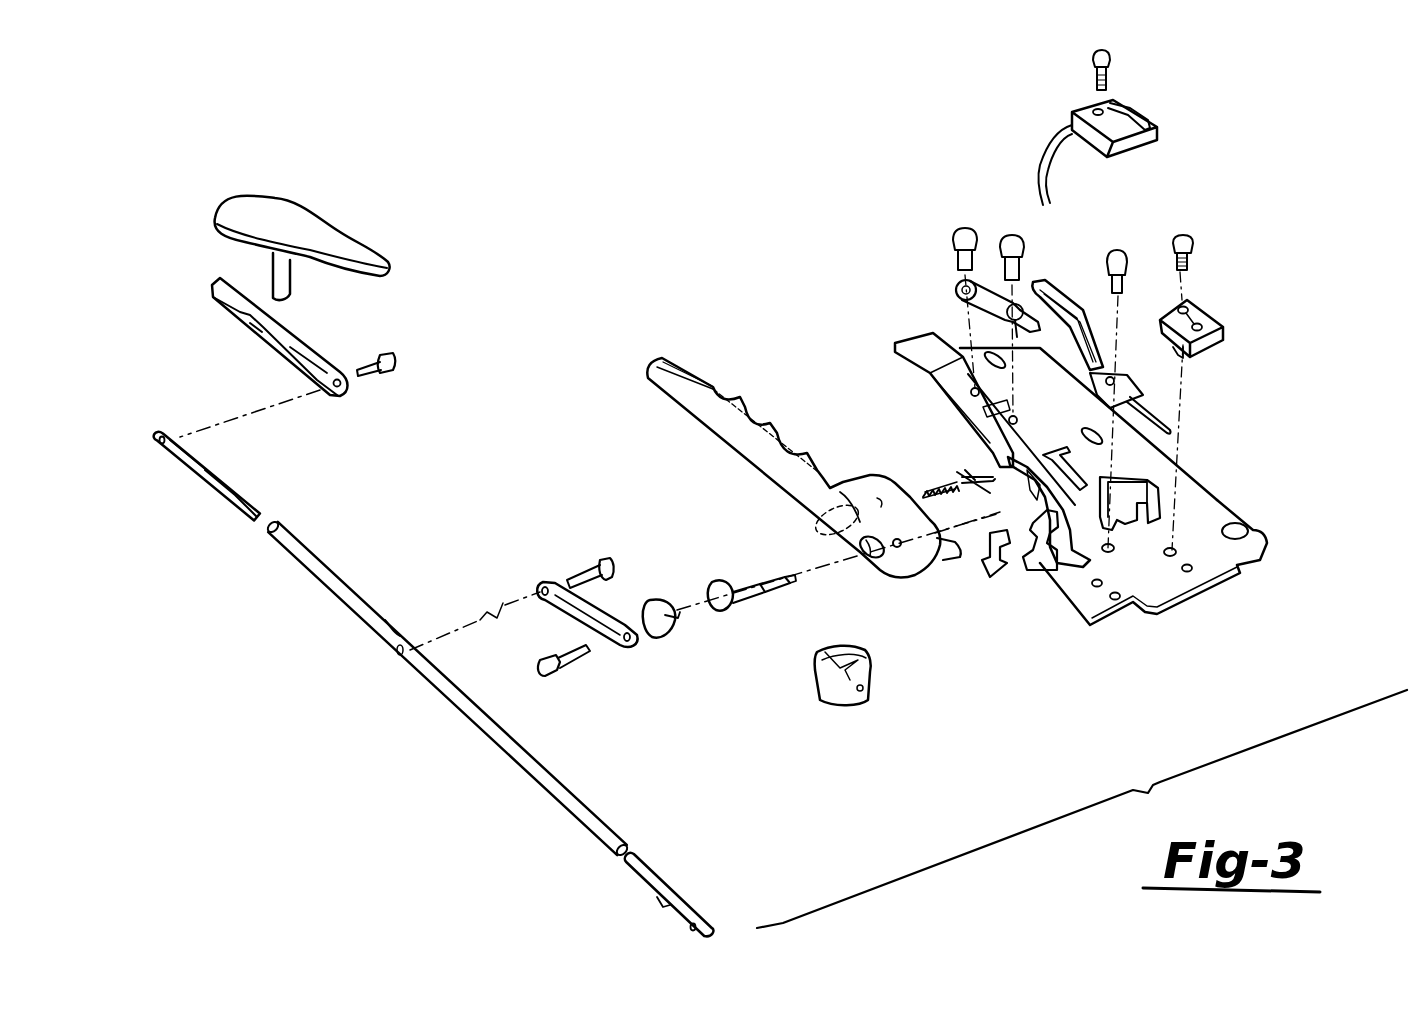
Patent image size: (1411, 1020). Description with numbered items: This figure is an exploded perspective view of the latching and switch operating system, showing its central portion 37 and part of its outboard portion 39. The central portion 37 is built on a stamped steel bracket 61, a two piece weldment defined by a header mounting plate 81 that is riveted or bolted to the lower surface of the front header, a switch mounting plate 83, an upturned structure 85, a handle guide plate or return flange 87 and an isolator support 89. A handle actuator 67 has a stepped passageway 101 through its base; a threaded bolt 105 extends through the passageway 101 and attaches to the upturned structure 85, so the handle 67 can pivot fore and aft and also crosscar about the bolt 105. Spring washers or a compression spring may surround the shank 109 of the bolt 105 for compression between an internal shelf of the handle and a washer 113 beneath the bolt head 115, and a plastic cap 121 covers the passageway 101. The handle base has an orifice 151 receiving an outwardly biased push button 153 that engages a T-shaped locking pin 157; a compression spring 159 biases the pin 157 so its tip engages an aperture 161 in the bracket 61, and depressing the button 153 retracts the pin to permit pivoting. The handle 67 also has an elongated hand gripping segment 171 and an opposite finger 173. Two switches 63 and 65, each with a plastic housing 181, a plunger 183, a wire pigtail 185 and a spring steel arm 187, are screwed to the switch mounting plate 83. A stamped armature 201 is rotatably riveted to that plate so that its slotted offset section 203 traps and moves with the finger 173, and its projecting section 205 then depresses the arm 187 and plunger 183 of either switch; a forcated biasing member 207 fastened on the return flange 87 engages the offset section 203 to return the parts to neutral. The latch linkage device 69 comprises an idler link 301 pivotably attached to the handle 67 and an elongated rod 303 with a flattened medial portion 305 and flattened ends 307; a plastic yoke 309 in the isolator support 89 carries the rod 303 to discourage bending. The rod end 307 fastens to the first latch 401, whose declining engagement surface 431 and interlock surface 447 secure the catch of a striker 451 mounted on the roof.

The central portion 37 is at (1190, 380).
The outboard portion 39 is at (395, 342).
The stamped steel bracket 61 is at (1270, 520).
The switch 63 is at (1200, 313).
The switch 65 is at (1092, 127).
The handle actuator 67 is at (791, 474).
The latch linkage device 69 is at (570, 549).
The header mounting plate 81 is at (1150, 460).
The switch mounting plate 83 is at (1160, 587).
The upturned structure 85 is at (1010, 463).
The return flange 87 is at (945, 397).
The isolator support 89 is at (1047, 547).
The stepped passageway 101 is at (880, 587).
The threaded bolt 105 is at (720, 597).
The shank 109 is at (773, 597).
The washer 113 is at (725, 595).
The bolt head 115 is at (727, 597).
The plastic cap 121 is at (657, 620).
The orifice 151 is at (830, 523).
The push button 153 is at (857, 703).
The locking pin 157 is at (955, 475).
The compression spring 159 is at (930, 477).
The aperture 161 is at (990, 477).
The hand gripping segment 171 is at (690, 400).
The finger 173 is at (943, 567).
The plastic housing 181 is at (1123, 143).
The plunger 183 is at (1120, 110).
The wire pigtail 185 is at (1049, 120).
The spring steel arm 187 is at (1143, 112).
The armature 201 is at (1133, 387).
The offset section 203 is at (1073, 287).
The projecting section 205 is at (1173, 425).
The biasing member 207 is at (958, 290).
The idler link 301 is at (613, 597).
The elongated rod 303 is at (333, 577).
The flattened medial portion 305 is at (433, 667).
The flattened end 307 is at (193, 457).
The plastic yoke 309 is at (997, 563).
The first latch 401 is at (328, 322).
The declining engagement surface 431 is at (267, 327).
The interlock surface 447 is at (250, 323).
The striker 451 is at (287, 270).